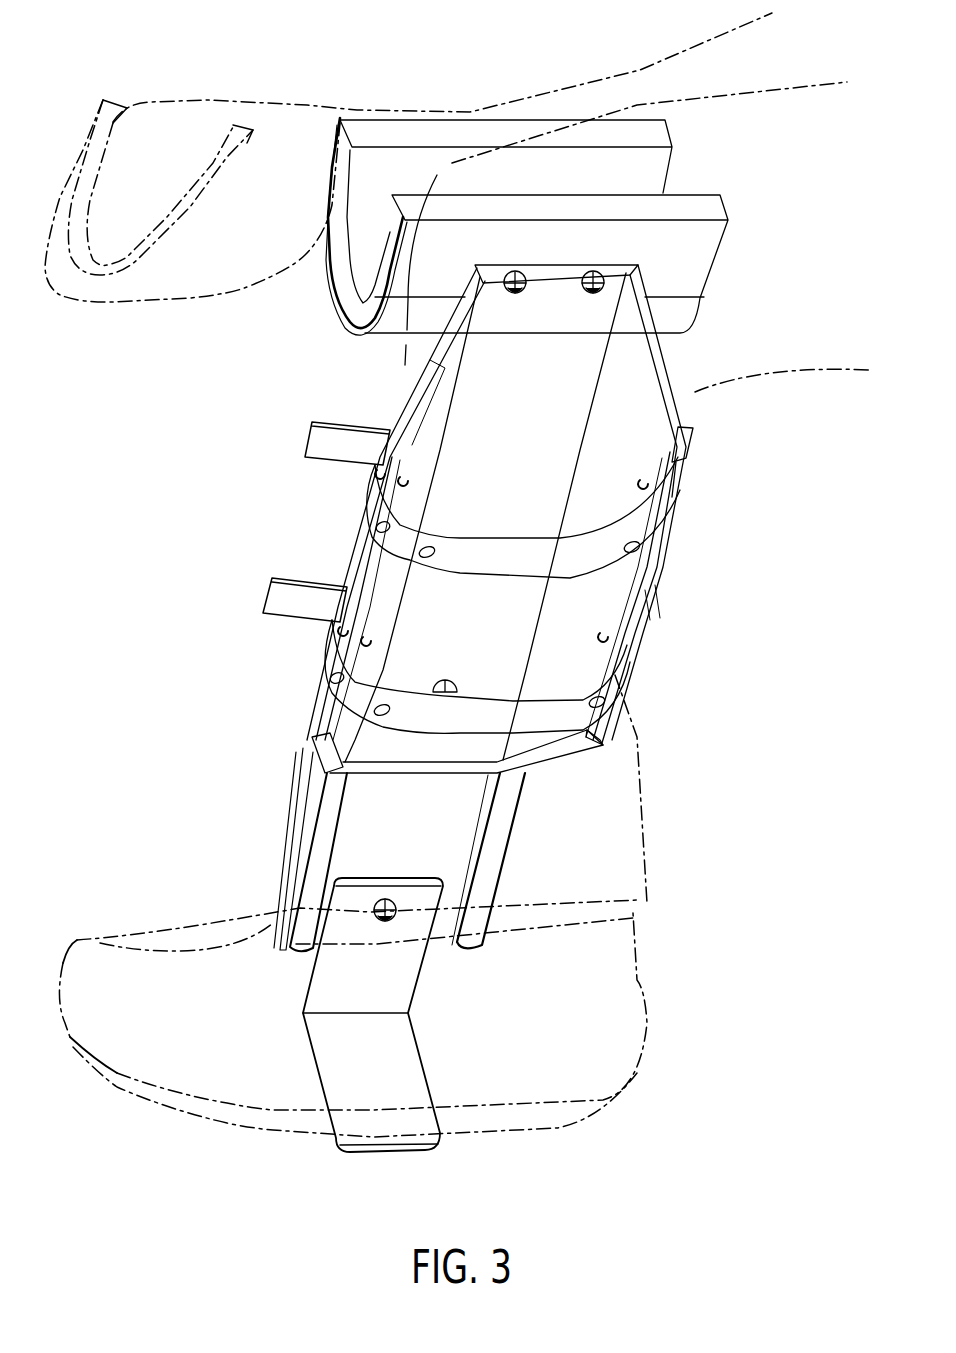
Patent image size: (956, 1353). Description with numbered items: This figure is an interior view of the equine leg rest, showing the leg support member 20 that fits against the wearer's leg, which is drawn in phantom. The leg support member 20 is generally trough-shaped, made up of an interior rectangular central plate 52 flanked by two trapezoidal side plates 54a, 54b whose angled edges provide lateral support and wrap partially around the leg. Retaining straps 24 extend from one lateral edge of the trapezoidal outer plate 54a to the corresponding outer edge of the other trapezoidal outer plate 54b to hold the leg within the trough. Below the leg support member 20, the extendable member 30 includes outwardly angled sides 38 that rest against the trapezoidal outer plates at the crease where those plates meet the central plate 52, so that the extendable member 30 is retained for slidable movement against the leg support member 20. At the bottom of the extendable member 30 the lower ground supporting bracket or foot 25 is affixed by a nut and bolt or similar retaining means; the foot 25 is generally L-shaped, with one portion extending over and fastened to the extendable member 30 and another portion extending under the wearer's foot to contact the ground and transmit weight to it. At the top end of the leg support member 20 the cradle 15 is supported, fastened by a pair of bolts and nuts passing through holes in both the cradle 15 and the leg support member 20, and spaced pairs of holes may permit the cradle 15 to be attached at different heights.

The cradle 15 is at (683, 253).
The leg support member 20 is at (517, 383).
The retaining straps 24 is at (328, 448).
The ground supporting bracket or foot 25 is at (347, 1065).
The extendable member 30 is at (453, 853).
The outwardly angled sides 38 is at (320, 830).
The central plate 52 is at (481, 642).
The trapezoidal side plate 54a is at (645, 457).
The trapezoidal side plate 54b is at (427, 453).